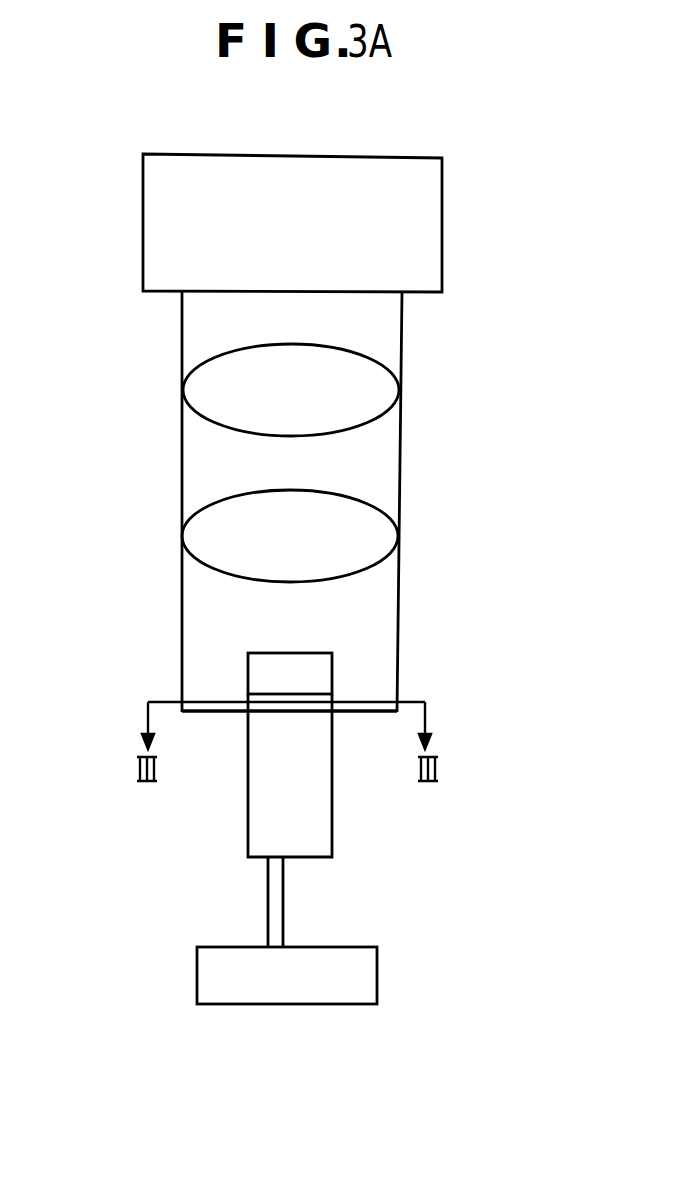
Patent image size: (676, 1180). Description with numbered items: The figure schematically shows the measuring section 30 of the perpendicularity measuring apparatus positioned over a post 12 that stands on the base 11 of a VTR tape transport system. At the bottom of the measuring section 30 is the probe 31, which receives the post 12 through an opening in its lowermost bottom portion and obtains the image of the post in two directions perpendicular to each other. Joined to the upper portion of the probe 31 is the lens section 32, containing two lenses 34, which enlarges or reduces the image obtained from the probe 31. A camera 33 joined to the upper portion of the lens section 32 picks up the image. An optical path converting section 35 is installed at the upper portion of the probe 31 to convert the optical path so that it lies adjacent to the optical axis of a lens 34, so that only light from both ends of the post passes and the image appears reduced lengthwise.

The base 11 is at (367, 971).
The post 12 is at (285, 899).
The measuring section 30 is at (410, 374).
The probe 31 is at (332, 780).
The lens section 32 is at (398, 478).
The camera 33 is at (425, 206).
The lens 34 is at (193, 388).
The optical path converting section 35 is at (320, 673).